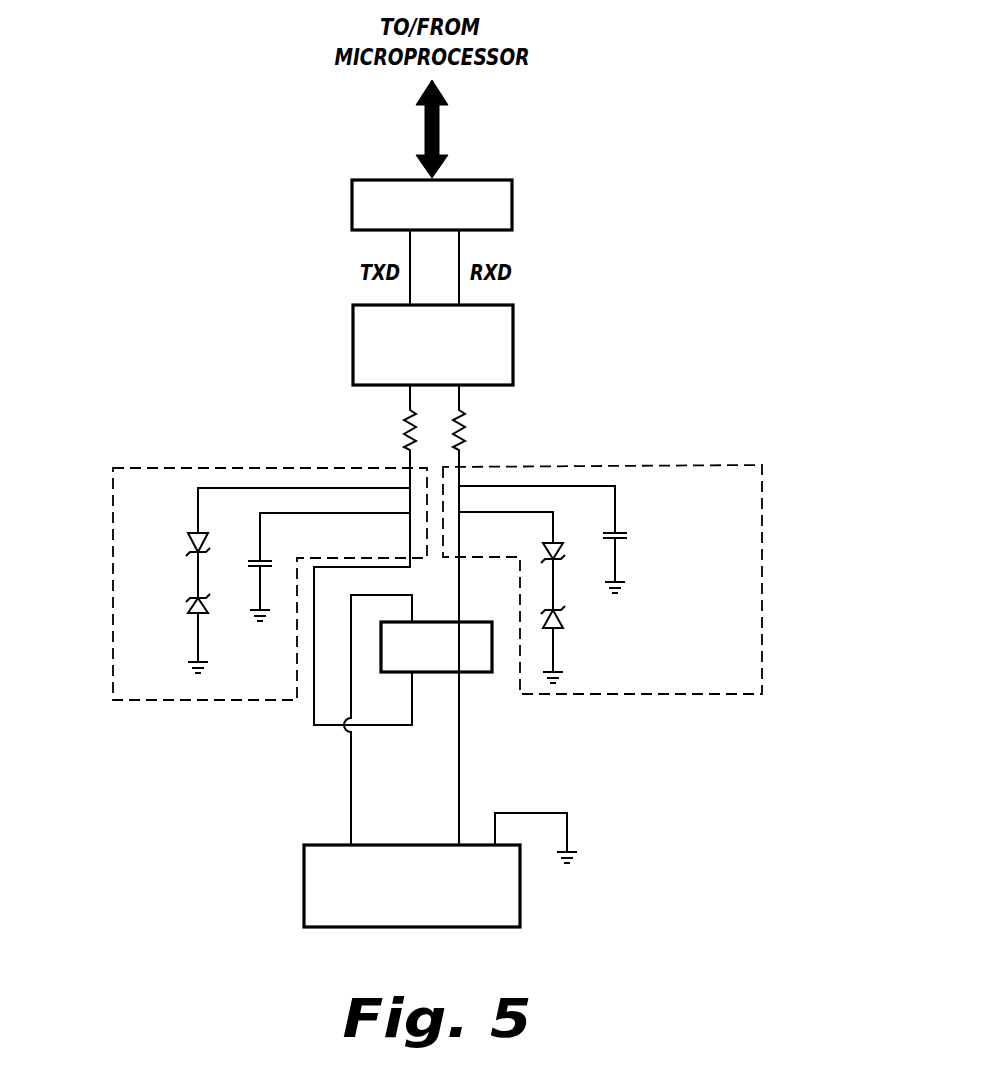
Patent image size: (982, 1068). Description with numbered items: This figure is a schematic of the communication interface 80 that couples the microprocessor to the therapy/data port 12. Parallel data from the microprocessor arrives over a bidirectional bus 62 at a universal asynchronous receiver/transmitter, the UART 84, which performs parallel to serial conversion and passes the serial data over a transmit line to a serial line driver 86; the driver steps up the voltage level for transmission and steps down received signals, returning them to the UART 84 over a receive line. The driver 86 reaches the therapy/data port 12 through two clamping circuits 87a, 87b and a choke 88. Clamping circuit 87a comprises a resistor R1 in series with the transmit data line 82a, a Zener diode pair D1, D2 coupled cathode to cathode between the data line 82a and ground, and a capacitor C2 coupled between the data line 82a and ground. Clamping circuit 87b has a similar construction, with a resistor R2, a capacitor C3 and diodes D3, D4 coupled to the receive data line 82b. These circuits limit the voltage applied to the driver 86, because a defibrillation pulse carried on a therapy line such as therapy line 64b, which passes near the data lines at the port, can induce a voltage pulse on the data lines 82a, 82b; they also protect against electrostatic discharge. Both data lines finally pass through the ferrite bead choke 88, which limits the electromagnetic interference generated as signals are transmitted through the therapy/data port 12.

The therapy/data port 12 is at (304, 887).
The bus 62 is at (440, 128).
The therapy line 64b is at (570, 822).
The communication interface 80 is at (230, 308).
The data line 82a is at (350, 790).
The data line 82b is at (462, 783).
The universal asynchronous receiver/transmitter (UART) 84 is at (513, 203).
The RS-232 driver 86 is at (513, 327).
The clamping circuit 87a is at (148, 468).
The clamping circuit 87b is at (727, 465).
The choke 88 is at (492, 665).
The resistor R1 is at (405, 428).
The resistor R2 is at (463, 426).
The Zener diode D1 is at (190, 538).
The Zener diode D2 is at (190, 610).
The Zener diode D3 is at (548, 550).
The Zener diode D4 is at (562, 628).
The capacitor C2 is at (262, 562).
The capacitor C3 is at (620, 538).